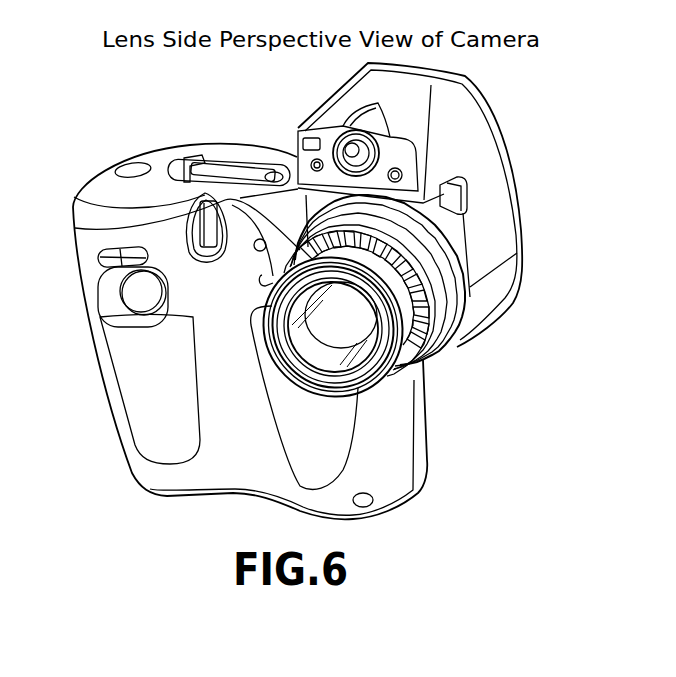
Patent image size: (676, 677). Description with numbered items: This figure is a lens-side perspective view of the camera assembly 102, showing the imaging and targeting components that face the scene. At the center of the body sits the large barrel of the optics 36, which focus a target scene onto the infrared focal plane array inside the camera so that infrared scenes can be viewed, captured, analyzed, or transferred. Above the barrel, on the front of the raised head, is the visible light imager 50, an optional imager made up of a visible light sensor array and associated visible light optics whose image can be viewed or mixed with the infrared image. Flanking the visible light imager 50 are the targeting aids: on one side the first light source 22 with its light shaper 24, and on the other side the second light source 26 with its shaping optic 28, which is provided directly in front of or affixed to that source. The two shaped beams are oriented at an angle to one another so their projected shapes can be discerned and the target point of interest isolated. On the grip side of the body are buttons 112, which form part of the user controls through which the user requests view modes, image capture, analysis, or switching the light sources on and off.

The camera assembly 102 is at (540, 236).
The visible light imager 50 is at (362, 156).
The light source 22 is at (261, 142).
The light shaper 24 is at (310, 163).
The second light source 26 is at (489, 154).
The shaping optic 28 is at (404, 176).
The optics 36 is at (343, 339).
The buttons 112 is at (133, 290).